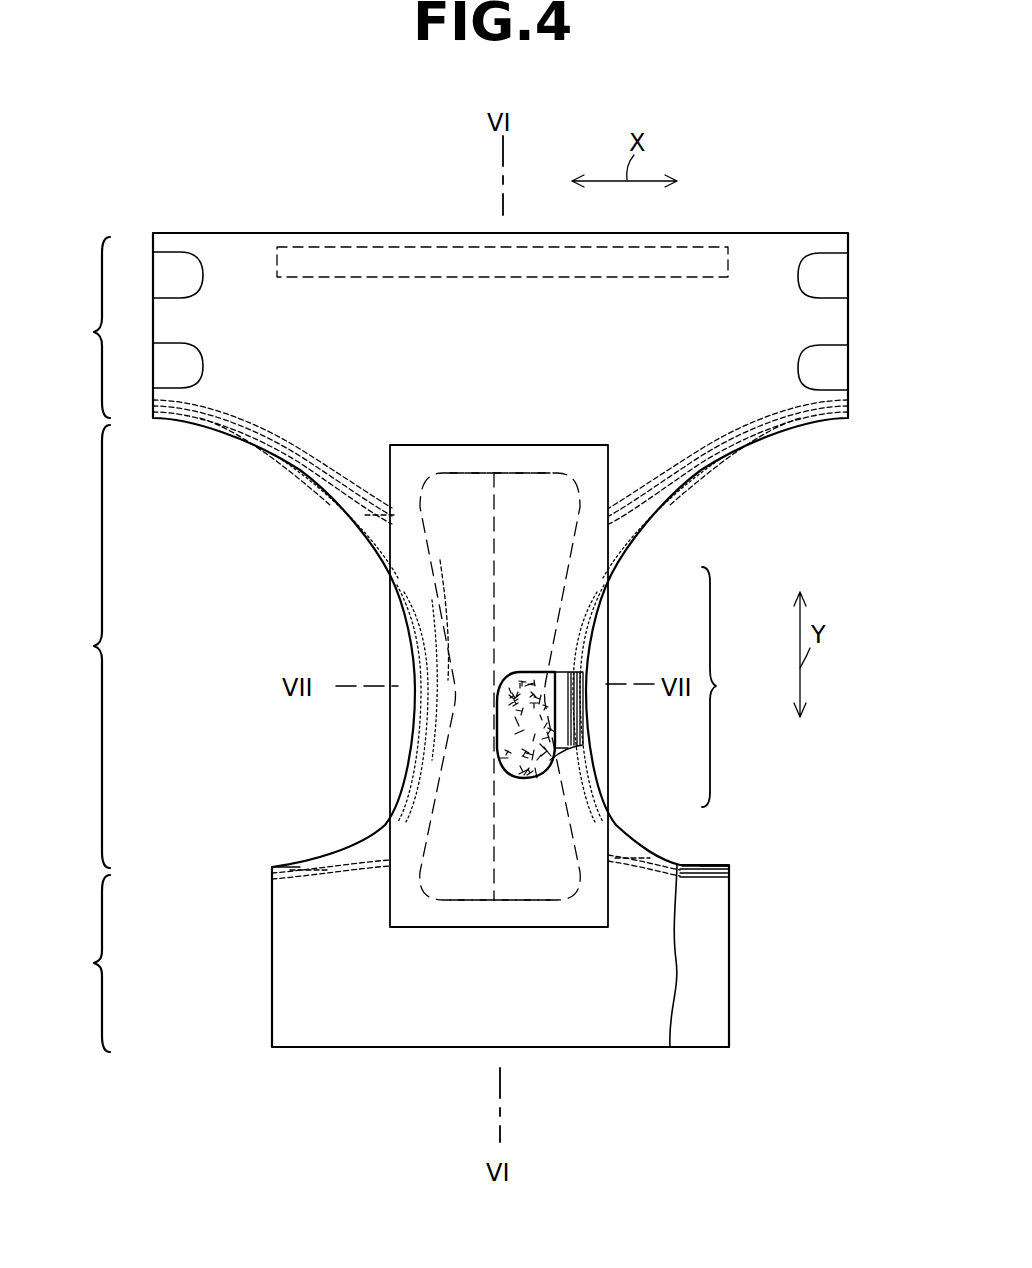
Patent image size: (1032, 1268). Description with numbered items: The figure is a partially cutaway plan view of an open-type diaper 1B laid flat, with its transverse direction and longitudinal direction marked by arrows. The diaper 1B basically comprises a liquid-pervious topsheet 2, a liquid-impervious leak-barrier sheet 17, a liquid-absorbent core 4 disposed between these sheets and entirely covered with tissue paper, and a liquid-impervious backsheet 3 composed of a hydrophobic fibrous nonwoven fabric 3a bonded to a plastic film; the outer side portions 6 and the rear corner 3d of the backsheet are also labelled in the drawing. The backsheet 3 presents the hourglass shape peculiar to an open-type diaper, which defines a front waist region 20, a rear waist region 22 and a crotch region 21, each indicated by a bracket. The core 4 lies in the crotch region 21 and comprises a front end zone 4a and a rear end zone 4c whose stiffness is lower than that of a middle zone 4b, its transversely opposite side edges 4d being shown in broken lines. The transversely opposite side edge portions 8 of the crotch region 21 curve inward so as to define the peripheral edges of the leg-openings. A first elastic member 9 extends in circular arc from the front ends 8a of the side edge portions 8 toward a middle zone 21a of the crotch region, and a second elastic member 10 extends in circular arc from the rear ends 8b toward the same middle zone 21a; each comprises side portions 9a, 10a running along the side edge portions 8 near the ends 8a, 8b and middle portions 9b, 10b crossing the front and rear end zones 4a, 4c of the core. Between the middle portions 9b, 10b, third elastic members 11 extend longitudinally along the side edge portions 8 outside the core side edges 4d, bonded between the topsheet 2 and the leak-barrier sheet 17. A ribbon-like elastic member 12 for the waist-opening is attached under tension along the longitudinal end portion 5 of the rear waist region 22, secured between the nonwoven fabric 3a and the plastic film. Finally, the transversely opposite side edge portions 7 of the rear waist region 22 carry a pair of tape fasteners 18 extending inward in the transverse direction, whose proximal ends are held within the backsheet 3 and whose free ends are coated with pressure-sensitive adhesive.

The open-type diaper 1B is at (757, 138).
The liquid-pervious topsheet 2 is at (594, 906).
The liquid-impervious backsheet 3 is at (654, 1038).
The hydrophobic fibrous nonwoven fabric 3a is at (525, 1030).
The backsheet rear portion 3d is at (724, 1031).
The liquid-absorbent core 4 is at (523, 690).
The front end zone 4a is at (492, 856).
The middle zone 4b is at (493, 692).
The rear end zone 4c is at (492, 520).
The transversely opposite side edges 4d is at (442, 630).
The longitudinal end portion 5 is at (683, 243).
The side flap 6 is at (290, 950).
The transversely opposite side edge portions 7 is at (166, 316).
The transversely opposite side edge portions 8 is at (410, 776).
The front ends 8a is at (272, 868).
The rear ends 8b is at (170, 420).
The first elastic member 9 is at (710, 866).
The side portions 9a is at (316, 858).
The middle portion 9b is at (626, 852).
The second elastic member 10 is at (816, 425).
The side portions 10a is at (300, 490).
The middle portion 10b is at (380, 520).
The third elastic members 11 is at (416, 732).
The ribbon-like elastic member 12 is at (378, 262).
The liquid-impervious leak-barrier sheet 17 is at (574, 738).
The tape fasteners 18 is at (170, 262).
The front waist region 20 is at (82, 963).
The crotch region 21 is at (82, 646).
The middle zone 21a is at (733, 687).
The rear waist region 22 is at (82, 327).